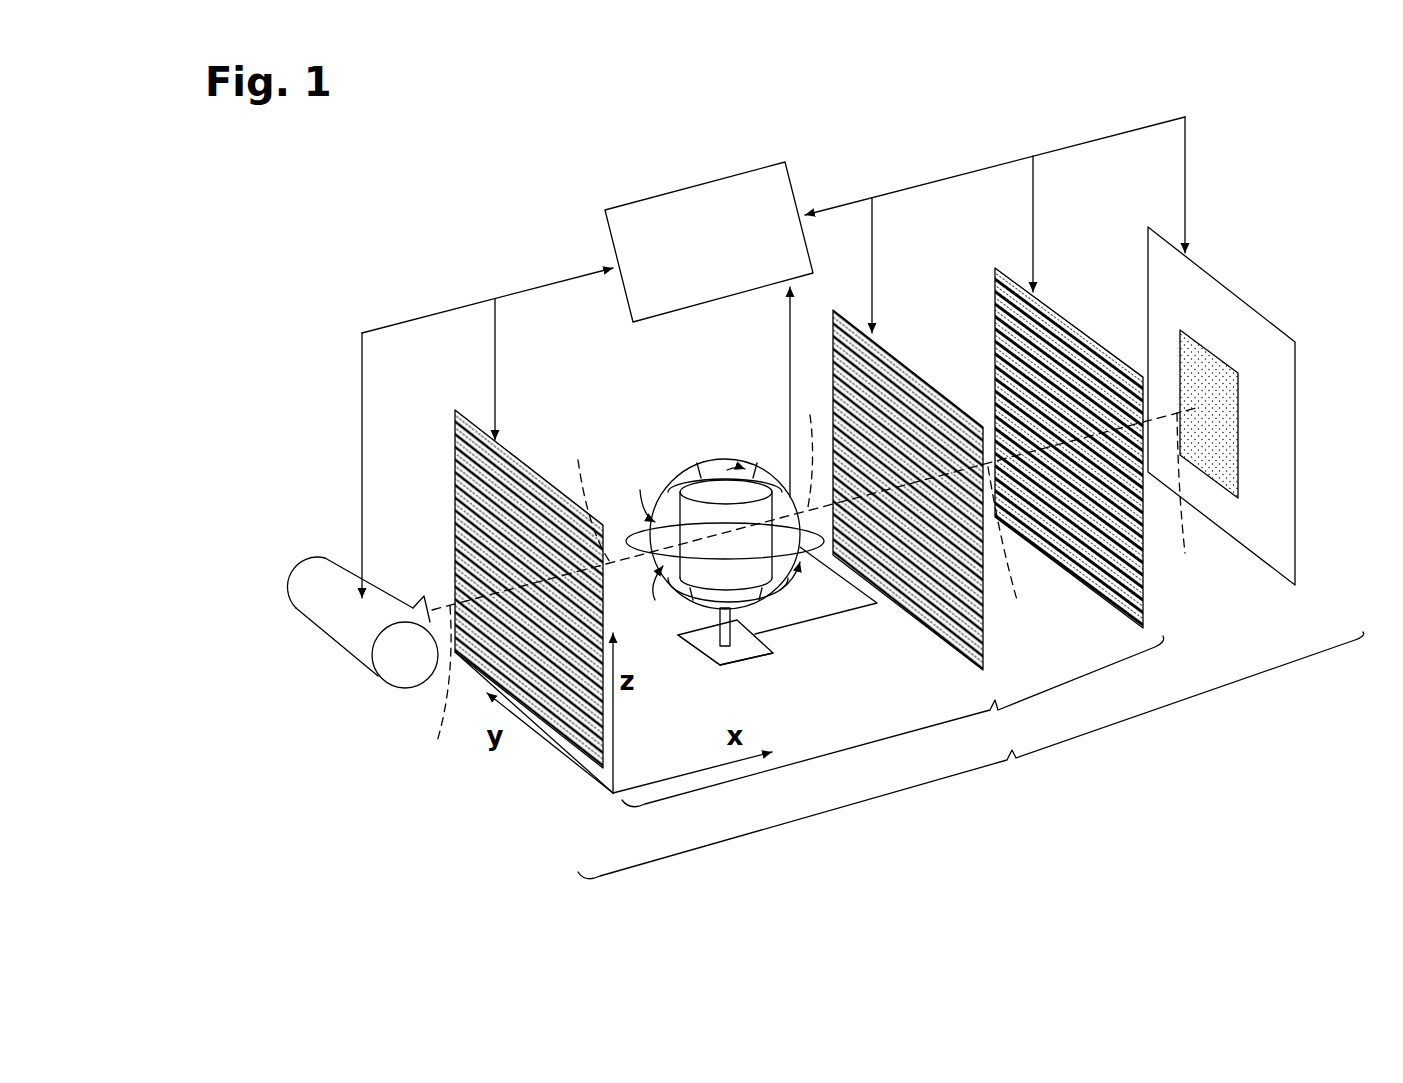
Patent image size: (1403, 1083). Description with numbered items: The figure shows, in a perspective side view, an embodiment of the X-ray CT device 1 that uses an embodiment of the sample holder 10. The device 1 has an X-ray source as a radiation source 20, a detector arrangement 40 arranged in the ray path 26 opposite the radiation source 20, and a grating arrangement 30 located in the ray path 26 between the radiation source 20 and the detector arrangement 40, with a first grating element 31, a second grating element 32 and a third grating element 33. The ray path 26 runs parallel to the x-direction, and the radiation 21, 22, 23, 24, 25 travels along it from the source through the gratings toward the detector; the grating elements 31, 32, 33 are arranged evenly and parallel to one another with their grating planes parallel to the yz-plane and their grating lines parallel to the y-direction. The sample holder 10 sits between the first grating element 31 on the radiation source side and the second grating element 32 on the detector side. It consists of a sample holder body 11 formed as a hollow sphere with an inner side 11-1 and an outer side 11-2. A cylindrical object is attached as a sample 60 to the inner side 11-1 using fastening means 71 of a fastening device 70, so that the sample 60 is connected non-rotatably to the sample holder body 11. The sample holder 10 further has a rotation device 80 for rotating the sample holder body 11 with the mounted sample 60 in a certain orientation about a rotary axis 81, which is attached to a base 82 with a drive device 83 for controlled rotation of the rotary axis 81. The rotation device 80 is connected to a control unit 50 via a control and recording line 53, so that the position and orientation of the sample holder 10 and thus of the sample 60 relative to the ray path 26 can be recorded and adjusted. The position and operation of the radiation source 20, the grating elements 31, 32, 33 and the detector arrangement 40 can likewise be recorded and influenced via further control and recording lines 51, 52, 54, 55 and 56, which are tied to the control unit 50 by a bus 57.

The X-ray CT device 1 is at (408, 222).
The sample holder 10 is at (658, 455).
The sample holder body 11 is at (740, 462).
The inner side 11-1 is at (655, 600).
The outer side 11-2 is at (631, 490).
The radiation source 20 is at (320, 648).
The radiation 21 is at (447, 695).
The radiation 22 is at (583, 496).
The radiation 23 is at (811, 446).
The radiation 24 is at (1020, 551).
The radiation 25 is at (1192, 501).
The ray path 26 is at (971, 755).
The grating arrangement 30 is at (893, 721).
The first grating element 31 is at (525, 450).
The second grating element 32 is at (903, 348).
The third grating element 33 is at (1065, 305).
The detector arrangement 40 is at (1218, 265).
The control unit 50 is at (675, 195).
The control and recording line 51 is at (362, 421).
The control and recording line 52 is at (495, 336).
The control and recording line 53 is at (790, 333).
The control and recording line 54 is at (872, 236).
The control and recording line 55 is at (1033, 193).
The control and recording line 56 is at (1185, 153).
The bus 57 is at (525, 291).
The sample 60 is at (748, 566).
The fastening device 70 is at (698, 463).
The fastening means 71 is at (768, 588).
The rotation device 80 is at (778, 660).
The rotary axis 81 is at (716, 648).
The base 82 is at (760, 657).
The drive device 83 is at (699, 650).